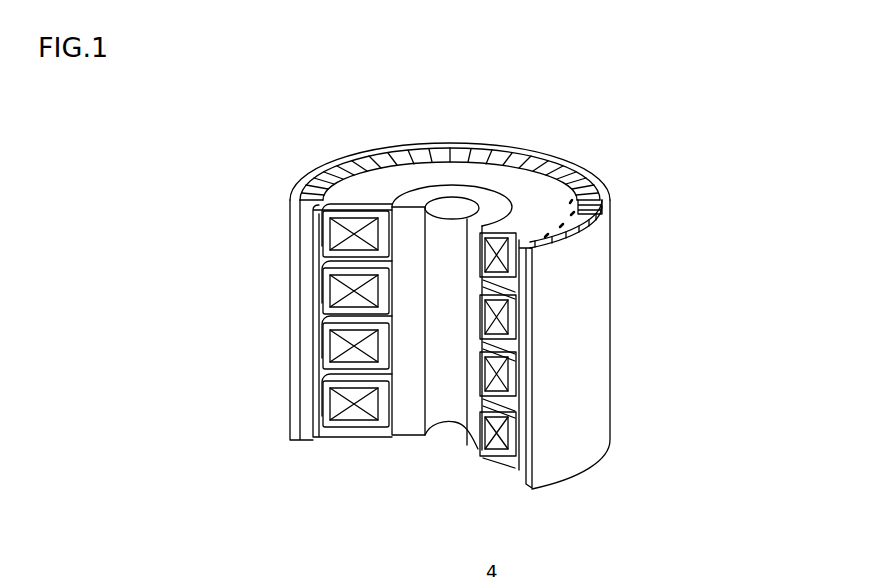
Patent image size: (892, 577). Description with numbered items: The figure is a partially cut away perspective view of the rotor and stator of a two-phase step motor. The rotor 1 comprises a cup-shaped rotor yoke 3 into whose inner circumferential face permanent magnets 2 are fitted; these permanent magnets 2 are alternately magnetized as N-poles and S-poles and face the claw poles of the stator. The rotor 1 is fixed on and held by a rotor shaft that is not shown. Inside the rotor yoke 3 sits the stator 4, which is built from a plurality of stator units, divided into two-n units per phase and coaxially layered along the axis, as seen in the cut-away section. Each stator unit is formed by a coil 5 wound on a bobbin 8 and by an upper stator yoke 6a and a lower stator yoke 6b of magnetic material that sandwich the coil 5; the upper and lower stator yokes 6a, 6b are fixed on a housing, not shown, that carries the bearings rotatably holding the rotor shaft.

The rotor 1 is at (753, 47).
The permanent magnet 2 is at (695, 108).
The rotor yoke 3 is at (608, 190).
The stator 4 is at (313, 240).
The coil 5 is at (505, 265).
The upper stator yoke 6a is at (540, 203).
The lower stator yoke 6b is at (513, 290).
The bobbin 8 is at (348, 217).